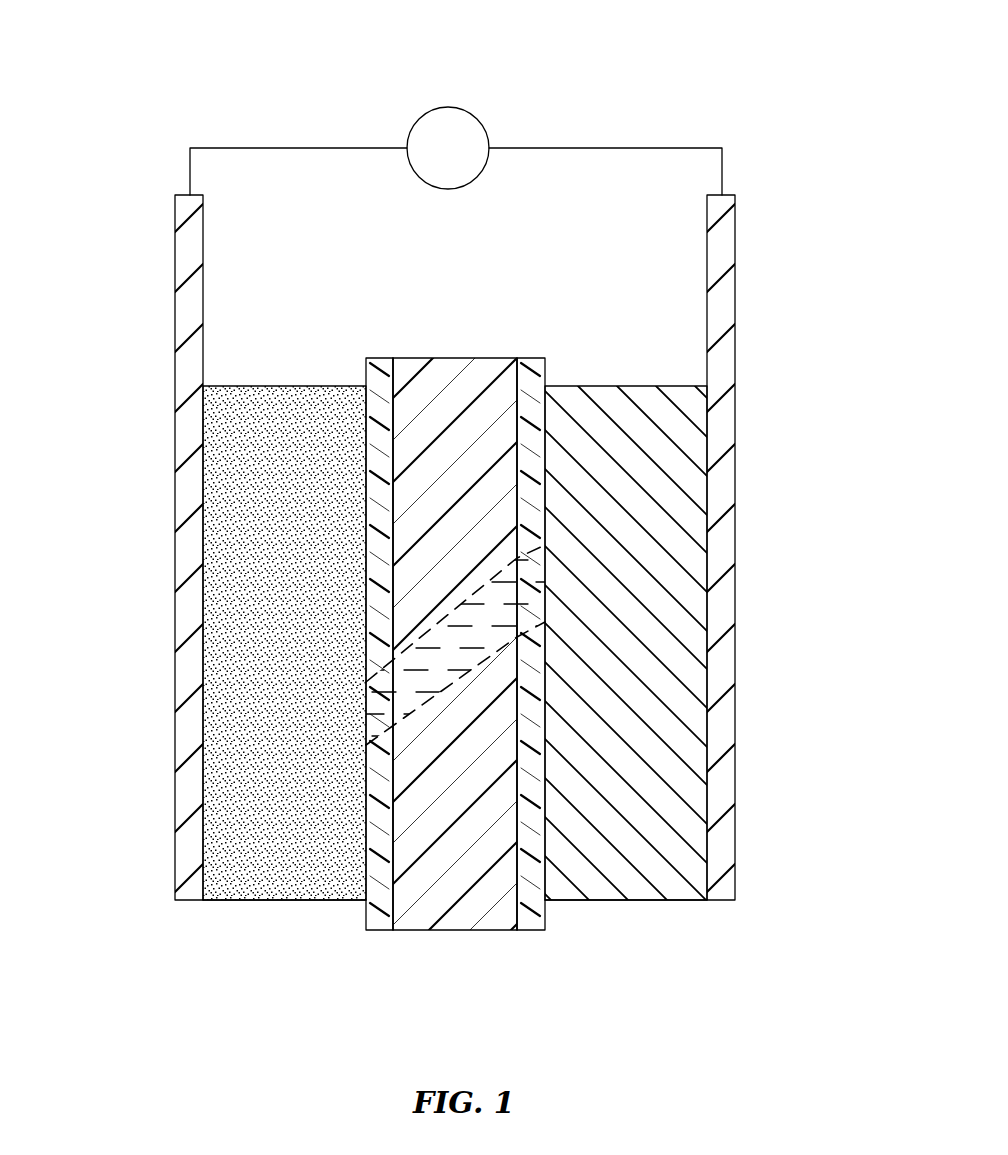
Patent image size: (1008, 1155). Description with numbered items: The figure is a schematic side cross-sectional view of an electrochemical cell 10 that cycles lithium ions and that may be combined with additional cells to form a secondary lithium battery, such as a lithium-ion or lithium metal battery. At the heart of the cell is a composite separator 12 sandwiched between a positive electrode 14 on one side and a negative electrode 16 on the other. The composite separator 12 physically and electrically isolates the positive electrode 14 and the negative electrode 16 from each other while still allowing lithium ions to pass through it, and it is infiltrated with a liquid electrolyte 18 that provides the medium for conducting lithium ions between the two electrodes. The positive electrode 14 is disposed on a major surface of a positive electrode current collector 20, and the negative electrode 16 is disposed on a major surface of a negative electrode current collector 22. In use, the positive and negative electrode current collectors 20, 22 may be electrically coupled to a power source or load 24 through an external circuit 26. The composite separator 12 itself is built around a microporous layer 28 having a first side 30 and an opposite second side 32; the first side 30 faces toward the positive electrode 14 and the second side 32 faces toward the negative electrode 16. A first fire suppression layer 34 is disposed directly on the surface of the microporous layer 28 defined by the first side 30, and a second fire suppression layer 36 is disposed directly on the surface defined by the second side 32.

The electrochemical cell 10 is at (205, 108).
The composite separator 12 is at (430, 656).
The positive electrode 14 is at (218, 903).
The negative electrode 16 is at (686, 903).
The liquid electrolyte 18 is at (478, 590).
The positive electrode current collector 20 is at (175, 547).
The negative electrode current collector 22 is at (735, 547).
The power source or load 24 is at (463, 165).
The external circuit 26 is at (596, 148).
The microporous layer 28 is at (452, 358).
The first side 30 is at (394, 830).
The second side 32 is at (581, 674).
The first fire suppression layer 34 is at (381, 358).
The second fire suppression layer 36 is at (530, 358).